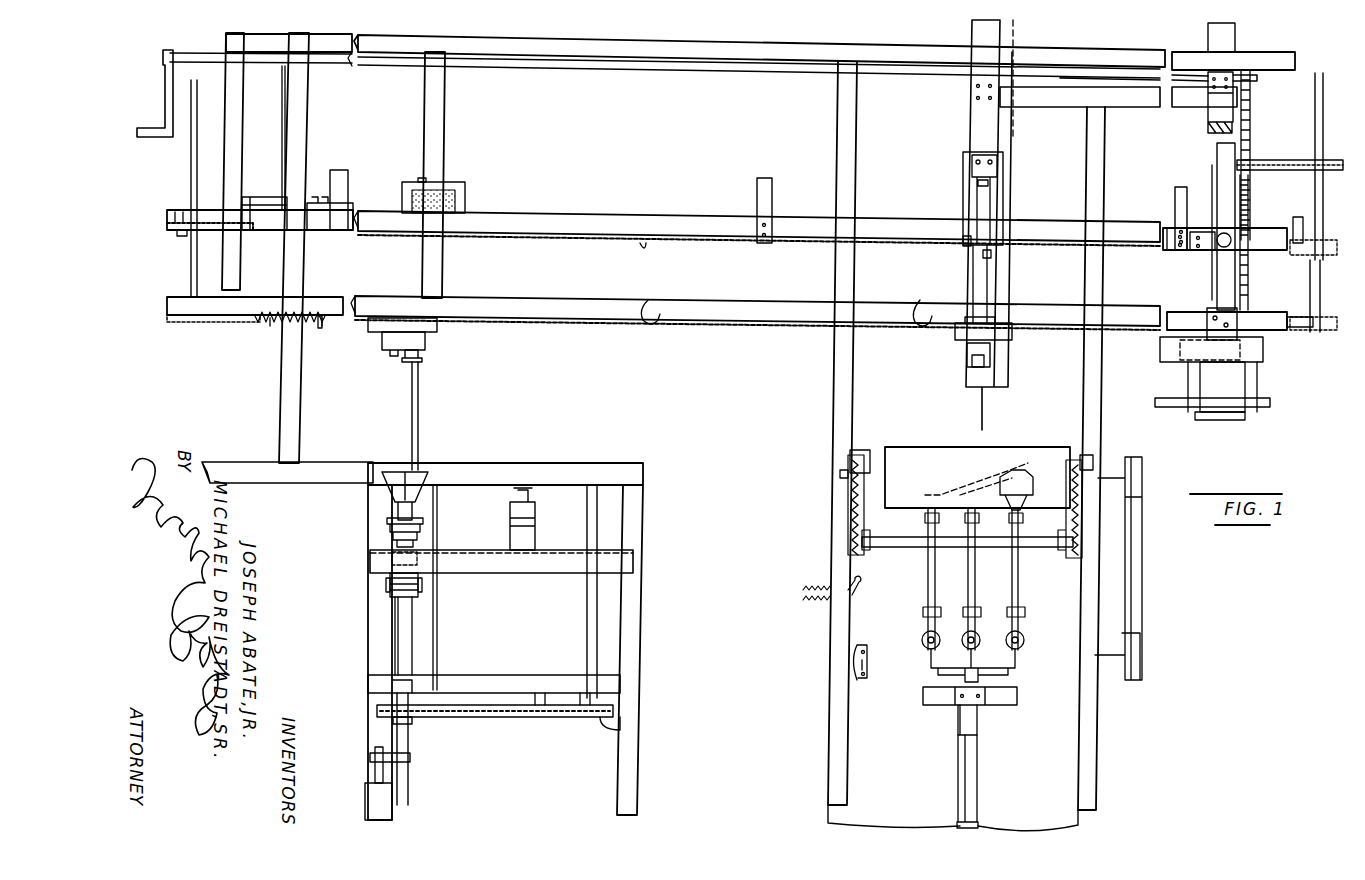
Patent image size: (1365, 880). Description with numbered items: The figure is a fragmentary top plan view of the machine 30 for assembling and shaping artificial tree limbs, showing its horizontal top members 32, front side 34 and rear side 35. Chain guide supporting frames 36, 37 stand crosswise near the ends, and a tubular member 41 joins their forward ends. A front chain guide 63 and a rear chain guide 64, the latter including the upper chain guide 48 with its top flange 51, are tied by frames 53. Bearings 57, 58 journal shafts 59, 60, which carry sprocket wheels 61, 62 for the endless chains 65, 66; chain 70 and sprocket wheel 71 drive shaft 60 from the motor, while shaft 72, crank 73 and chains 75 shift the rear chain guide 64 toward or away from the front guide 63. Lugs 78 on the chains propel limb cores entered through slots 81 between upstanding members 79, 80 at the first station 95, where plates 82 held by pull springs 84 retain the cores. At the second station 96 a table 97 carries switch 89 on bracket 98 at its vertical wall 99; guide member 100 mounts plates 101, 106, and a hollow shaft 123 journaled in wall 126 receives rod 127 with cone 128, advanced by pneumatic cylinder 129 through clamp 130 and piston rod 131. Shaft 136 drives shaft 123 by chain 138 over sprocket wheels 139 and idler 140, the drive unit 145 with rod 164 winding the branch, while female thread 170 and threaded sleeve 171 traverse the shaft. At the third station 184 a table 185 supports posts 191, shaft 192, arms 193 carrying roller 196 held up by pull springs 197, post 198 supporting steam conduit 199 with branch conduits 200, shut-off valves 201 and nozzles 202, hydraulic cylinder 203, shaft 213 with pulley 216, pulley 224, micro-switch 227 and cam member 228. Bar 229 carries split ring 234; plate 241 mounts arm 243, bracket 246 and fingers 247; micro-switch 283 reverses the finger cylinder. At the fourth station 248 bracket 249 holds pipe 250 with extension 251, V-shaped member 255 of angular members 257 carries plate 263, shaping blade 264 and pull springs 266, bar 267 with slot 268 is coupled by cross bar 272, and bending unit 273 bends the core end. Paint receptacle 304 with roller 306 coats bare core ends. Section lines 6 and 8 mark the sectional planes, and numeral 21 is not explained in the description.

The section line 6- 6 is at (1023, 32).
The section line 8- 8 is at (1310, 426).
The rack 21 is at (1250, 194).
The machine 30 is at (817, 345).
The horizontal top members 32 is at (498, 42).
The front side 34 is at (714, 330).
The rear side 35 is at (800, 50).
The chain guide supporting frame 36 is at (308, 140).
The chain guide supporting frame 37 is at (1239, 145).
The tubular member 41 is at (752, 310).
The upper chain guide 48 is at (569, 219).
The horizontal top flange 51 is at (676, 222).
The frames 53 is at (350, 176).
The bearings 57 is at (180, 298).
The bearings 58 is at (182, 212).
The shaft 59 is at (190, 160).
The shaft 60 is at (1322, 280).
The sprocket wheels 61 is at (176, 323).
The sprocket wheels 62 is at (172, 228).
The front chain guide 63 is at (585, 327).
The rear chain guide 64 is at (605, 241).
The endless chain 65 is at (1293, 332).
The endless chain 66 is at (1298, 240).
The endless chain 70 is at (1277, 160).
The sprocket wheel 71 is at (1333, 160).
The shaft 72 is at (620, 72).
The crank 73 is at (164, 85).
The chains 75 is at (282, 113).
The lugs 78 is at (643, 252).
The upstanding member 79 is at (245, 207).
The upstanding members 80 is at (265, 296).
The slot 81 is at (258, 358).
The plate 82 is at (308, 345).
The pull spring 84 is at (313, 200).
The switch 89 is at (525, 488).
The first station 95 is at (248, 350).
The second station 96 is at (425, 305).
The table 97 is at (591, 455).
The bracket 98 is at (535, 535).
The vertical wall 99 is at (470, 550).
The guide member 100 is at (430, 330).
The plate 101 is at (388, 318).
The plate 106 is at (400, 355).
The hollow shaft 123 is at (412, 640).
The wall 126 is at (430, 690).
The rod 127 is at (410, 787).
The cone 128 is at (395, 488).
The pneumatic cylinder 129 is at (370, 806).
The clamp 130 is at (410, 758).
The piston rod 131 is at (375, 774).
The shaft 136 is at (587, 622).
The endless chain 138 is at (497, 718).
The sprocket wheels 139 is at (623, 728).
The idler sprocket wheel 140 is at (543, 718).
The drive unit 145 is at (379, 544).
The rod 164 is at (420, 428).
The female thread 170 is at (390, 595).
The threaded sleeve 171 is at (422, 588).
The third station 184 is at (993, 305).
The table 185 is at (1112, 732).
The posts 191 is at (860, 555).
The shaft 192 is at (905, 548).
The arms 193 is at (848, 462).
The roller 196 is at (930, 471).
The pull springs 197 is at (847, 492).
The post 198 is at (1002, 711).
The steam conduit 199 is at (957, 723).
The branch conduits 200 is at (1012, 592).
The shut-off valve 201 is at (1015, 650).
The discharge nozzle 202 is at (1016, 478).
The hydraulic cylinder 203 is at (957, 792).
The shaft 213 is at (1113, 658).
The belt pulley 216 is at (1143, 665).
The pulley 224 is at (1143, 482).
The micro-switch 227 is at (837, 600).
The cam member 228 is at (852, 662).
The bar 229 is at (972, 122).
The split ring 234 is at (1000, 338).
The plate 241 is at (962, 194).
The arm 243 is at (966, 355).
The bracket 246 is at (998, 172).
The fingers 247 is at (984, 369).
The fourth station 248 is at (1240, 312).
The bracket 249 is at (1212, 318).
The pipe 250 is at (1195, 352).
The inclined extension 251 is at (1160, 352).
The V-shaped member 255 is at (1276, 402).
The angular members 257 is at (1263, 384).
The plate 263 is at (1225, 420).
The shaping blade 264 is at (1222, 398).
The pull springs 266 is at (1245, 420).
The bar 267 is at (1216, 148).
The slot 268 is at (1208, 128).
The cross bar 272 is at (1055, 107).
The bending unit 273 is at (1207, 256).
The micro-switch 283 is at (963, 238).
The paint receptacle 304 is at (468, 208).
The roller 306 is at (468, 196).